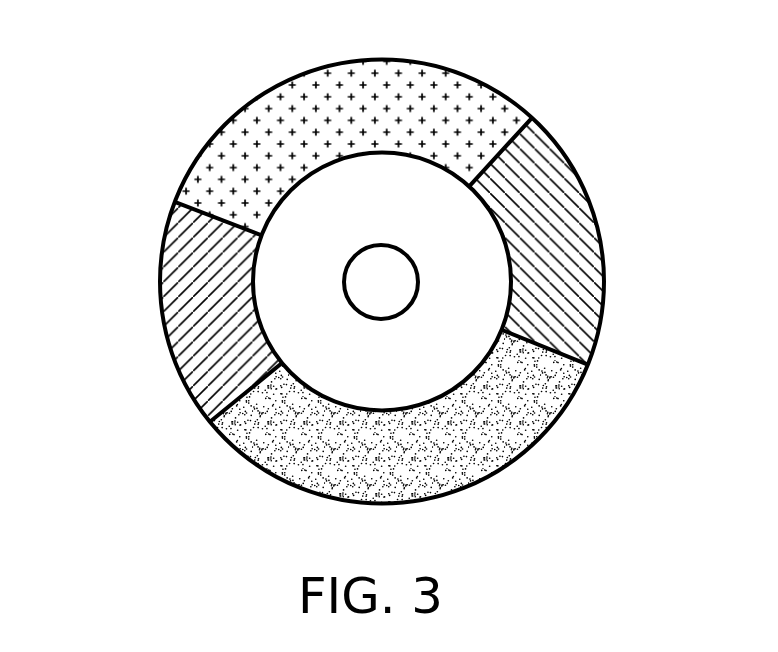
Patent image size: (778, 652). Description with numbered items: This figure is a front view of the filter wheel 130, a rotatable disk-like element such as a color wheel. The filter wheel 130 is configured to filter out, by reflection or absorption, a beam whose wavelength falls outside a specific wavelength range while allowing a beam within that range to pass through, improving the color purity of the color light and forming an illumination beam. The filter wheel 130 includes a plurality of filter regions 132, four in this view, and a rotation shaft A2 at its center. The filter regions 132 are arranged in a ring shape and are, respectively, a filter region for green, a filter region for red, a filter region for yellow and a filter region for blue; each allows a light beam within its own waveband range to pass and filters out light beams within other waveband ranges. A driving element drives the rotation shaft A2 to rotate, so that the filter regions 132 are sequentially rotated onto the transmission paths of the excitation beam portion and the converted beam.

The filter wheel 130 is at (385, 279).
The filter regions 132 is at (275, 118).
The rotation shaft A2 is at (414, 282).